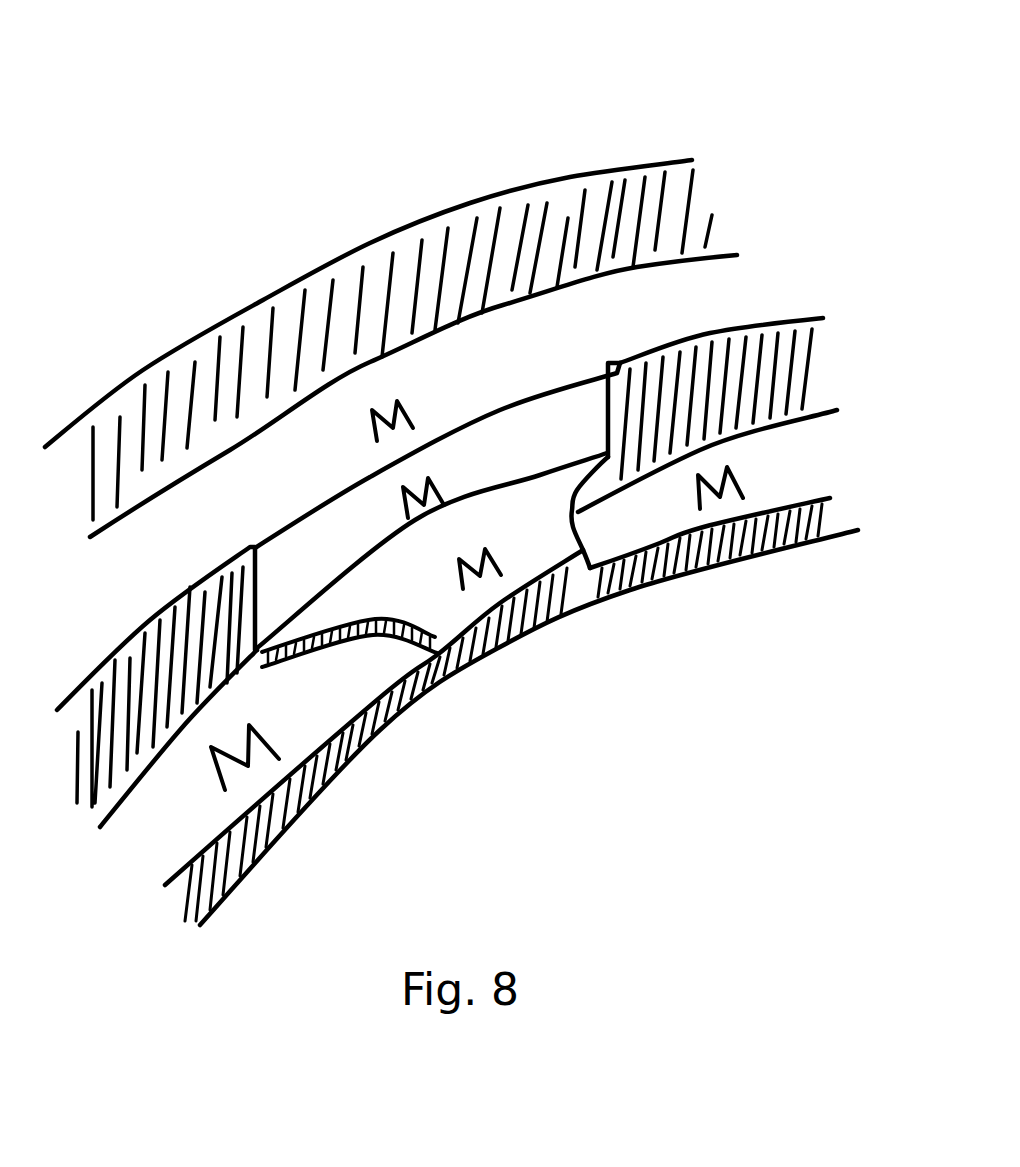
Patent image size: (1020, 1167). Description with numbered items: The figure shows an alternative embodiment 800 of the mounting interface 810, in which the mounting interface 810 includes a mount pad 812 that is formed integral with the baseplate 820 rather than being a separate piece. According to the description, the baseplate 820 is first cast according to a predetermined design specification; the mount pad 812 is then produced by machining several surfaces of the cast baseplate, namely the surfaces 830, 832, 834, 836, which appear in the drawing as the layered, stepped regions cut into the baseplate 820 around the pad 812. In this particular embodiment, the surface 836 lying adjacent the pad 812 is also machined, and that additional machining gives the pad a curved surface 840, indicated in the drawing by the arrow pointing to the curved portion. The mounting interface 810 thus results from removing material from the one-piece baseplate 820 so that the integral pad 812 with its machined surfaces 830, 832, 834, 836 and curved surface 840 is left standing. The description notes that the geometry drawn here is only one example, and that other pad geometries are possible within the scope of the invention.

The alternative embodiment 800 is at (400, 56).
The mounting interface 810 is at (593, 538).
The mount pad 812 is at (567, 617).
The baseplate 820 is at (315, 248).
The machined surface 830 is at (442, 612).
The machined surface 832 is at (510, 440).
The machined surface 834 is at (582, 312).
The surface adjacent the pad 836 is at (778, 488).
The curved surface 840 is at (352, 663).